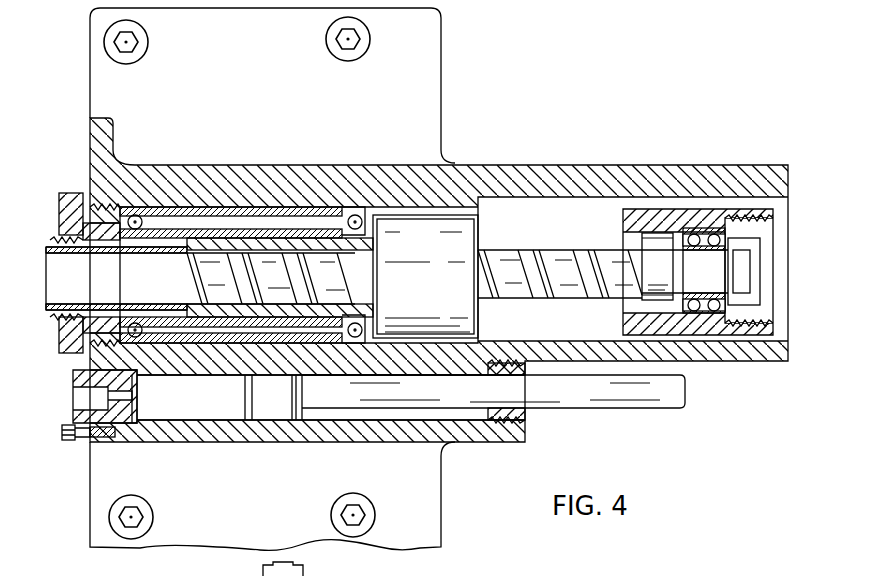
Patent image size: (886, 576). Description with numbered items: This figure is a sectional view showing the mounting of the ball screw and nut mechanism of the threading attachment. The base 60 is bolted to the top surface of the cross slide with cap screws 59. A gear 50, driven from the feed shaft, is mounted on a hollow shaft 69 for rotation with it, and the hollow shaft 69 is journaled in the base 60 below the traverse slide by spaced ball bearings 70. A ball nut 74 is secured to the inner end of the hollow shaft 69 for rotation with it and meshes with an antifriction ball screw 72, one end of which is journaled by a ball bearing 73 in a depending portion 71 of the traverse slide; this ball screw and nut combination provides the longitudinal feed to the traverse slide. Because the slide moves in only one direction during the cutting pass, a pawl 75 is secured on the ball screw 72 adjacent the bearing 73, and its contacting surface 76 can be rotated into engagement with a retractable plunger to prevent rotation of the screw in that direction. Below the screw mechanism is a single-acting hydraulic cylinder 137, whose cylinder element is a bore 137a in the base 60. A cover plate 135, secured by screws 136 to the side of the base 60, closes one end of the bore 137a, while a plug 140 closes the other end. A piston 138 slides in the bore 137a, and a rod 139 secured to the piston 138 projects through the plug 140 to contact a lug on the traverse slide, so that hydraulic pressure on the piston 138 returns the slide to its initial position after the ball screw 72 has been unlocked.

The gear 50 is at (78, 181).
The cap screws 59 is at (362, 502).
The base 60 is at (253, 86).
The hollow shaft 69 is at (98, 251).
The ball bearings 70 is at (143, 323).
The depending portion 71 is at (635, 326).
The ball screw 72 is at (566, 233).
The ball bearing 73 is at (718, 252).
The ball nut 74 is at (433, 252).
The pawl 75 is at (655, 282).
The contacting surface 76 is at (664, 240).
The cover plate 135 is at (72, 378).
The screws 136 is at (66, 432).
The single-acting hydraulic cylinder 137 is at (180, 412).
The bore 137a is at (244, 416).
The piston 138 is at (302, 395).
The rod 139 is at (622, 400).
The plug 140 is at (525, 415).